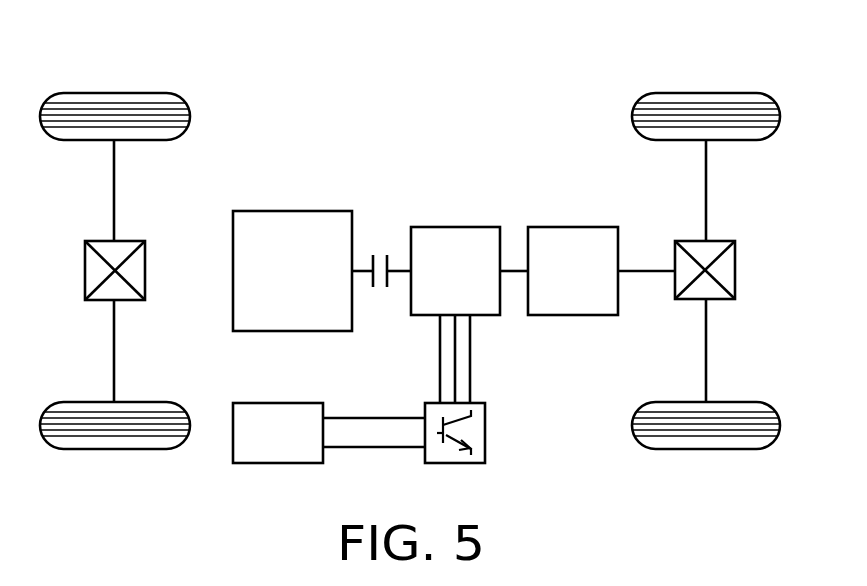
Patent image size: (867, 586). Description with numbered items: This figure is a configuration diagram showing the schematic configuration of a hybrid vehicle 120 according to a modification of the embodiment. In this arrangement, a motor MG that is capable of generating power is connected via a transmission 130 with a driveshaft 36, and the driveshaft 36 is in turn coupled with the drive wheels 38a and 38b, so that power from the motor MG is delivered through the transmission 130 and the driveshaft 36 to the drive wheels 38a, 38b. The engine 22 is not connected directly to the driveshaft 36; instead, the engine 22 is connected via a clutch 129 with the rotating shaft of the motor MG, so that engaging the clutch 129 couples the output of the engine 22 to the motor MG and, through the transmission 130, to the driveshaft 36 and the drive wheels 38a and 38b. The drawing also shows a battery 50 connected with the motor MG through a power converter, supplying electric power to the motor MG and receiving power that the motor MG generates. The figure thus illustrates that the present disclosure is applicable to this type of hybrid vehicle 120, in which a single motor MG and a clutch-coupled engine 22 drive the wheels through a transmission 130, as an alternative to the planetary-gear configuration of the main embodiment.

The hybrid vehicle 120 is at (551, 78).
The engine 22 is at (292, 211).
The clutch 129 is at (382, 250).
The motor MG is at (455, 227).
The transmission 130 is at (573, 227).
The driveshaft 36 is at (647, 268).
The drive wheel 38a is at (706, 91).
The drive wheel 38b is at (706, 449).
The battery 50 is at (277, 403).